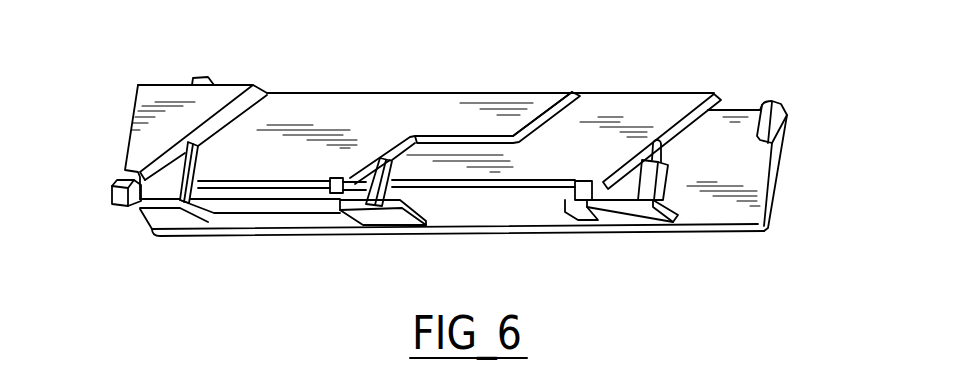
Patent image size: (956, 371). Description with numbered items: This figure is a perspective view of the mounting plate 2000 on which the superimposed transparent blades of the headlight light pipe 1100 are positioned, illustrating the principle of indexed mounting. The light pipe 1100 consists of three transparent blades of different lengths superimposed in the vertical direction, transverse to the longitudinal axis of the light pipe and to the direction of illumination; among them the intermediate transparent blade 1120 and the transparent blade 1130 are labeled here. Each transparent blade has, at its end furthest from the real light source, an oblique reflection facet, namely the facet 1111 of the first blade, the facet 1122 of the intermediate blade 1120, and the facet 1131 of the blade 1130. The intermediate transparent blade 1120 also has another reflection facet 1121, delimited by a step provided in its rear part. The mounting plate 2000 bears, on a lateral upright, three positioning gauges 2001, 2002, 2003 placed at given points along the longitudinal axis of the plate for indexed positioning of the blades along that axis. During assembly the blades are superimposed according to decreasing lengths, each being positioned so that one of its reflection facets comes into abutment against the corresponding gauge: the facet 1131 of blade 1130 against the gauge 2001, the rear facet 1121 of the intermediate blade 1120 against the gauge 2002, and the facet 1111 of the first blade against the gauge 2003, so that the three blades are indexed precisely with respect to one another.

The light pipe 1100 is at (227, 95).
The oblique reflection facet 1111 is at (260, 90).
The transparent blade 1120 is at (502, 97).
The reflection facet 1121 is at (393, 97).
The oblique reflection facet 1122 is at (567, 93).
The transparent blade 1130 is at (652, 107).
The oblique reflection facet 1131 is at (692, 117).
The mounting plate 2000 is at (750, 180).
The positioning gauge 2001 is at (656, 182).
The positioning gauge 2002 is at (371, 205).
The positioning gauge 2003 is at (163, 178).